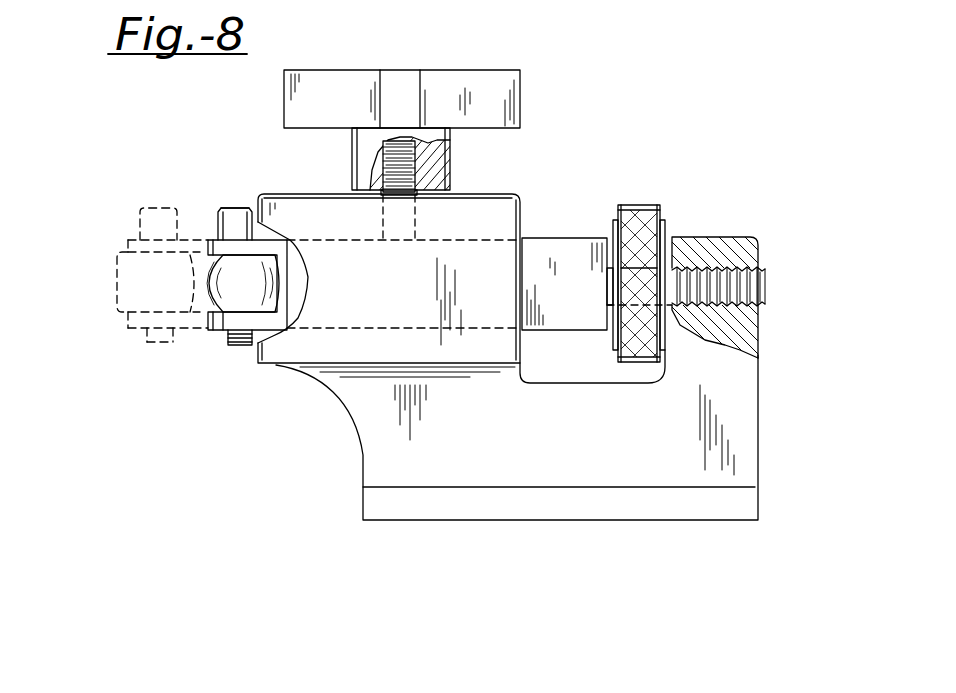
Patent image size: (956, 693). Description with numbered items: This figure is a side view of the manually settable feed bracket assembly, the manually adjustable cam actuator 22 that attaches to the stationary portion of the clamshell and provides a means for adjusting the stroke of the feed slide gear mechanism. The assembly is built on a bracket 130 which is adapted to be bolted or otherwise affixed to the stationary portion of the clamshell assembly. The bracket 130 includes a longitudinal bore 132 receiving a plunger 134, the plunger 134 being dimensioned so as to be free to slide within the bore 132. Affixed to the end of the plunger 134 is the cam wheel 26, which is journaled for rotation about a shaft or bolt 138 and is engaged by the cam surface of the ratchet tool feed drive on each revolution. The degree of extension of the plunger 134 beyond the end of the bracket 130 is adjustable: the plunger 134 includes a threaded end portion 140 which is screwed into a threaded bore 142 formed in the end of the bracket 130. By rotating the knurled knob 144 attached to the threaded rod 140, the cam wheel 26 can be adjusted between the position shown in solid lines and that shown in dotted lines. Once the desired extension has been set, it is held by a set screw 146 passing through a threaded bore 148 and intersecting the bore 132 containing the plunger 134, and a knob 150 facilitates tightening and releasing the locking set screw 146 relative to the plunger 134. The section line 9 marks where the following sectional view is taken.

The section line 9- 9 is at (243, 72).
The manually adjustable cam actuator 22 is at (318, 406).
The cam wheel 26 is at (218, 270).
The bracket 130 is at (728, 395).
The longitudinal bore 132 is at (492, 236).
The plunger 134 is at (540, 238).
The shaft (bolt) 138 is at (233, 207).
The threaded end portion 140 is at (766, 280).
The threaded bore 142 is at (720, 277).
The knurled knob 144 is at (652, 204).
The set screw 146 is at (448, 151).
The threaded bore 148 is at (378, 232).
The knob 150 is at (523, 66).